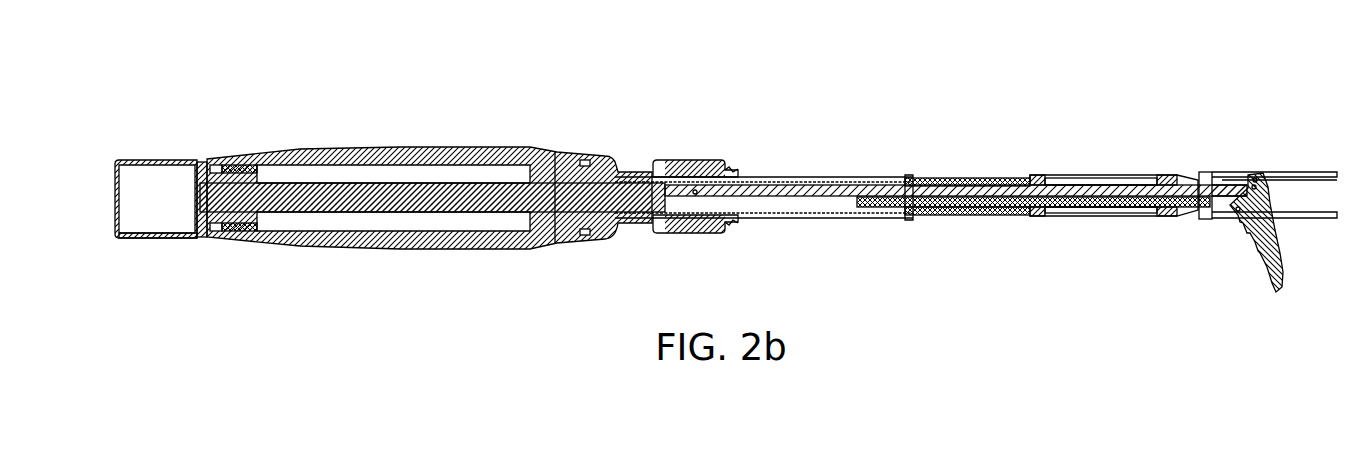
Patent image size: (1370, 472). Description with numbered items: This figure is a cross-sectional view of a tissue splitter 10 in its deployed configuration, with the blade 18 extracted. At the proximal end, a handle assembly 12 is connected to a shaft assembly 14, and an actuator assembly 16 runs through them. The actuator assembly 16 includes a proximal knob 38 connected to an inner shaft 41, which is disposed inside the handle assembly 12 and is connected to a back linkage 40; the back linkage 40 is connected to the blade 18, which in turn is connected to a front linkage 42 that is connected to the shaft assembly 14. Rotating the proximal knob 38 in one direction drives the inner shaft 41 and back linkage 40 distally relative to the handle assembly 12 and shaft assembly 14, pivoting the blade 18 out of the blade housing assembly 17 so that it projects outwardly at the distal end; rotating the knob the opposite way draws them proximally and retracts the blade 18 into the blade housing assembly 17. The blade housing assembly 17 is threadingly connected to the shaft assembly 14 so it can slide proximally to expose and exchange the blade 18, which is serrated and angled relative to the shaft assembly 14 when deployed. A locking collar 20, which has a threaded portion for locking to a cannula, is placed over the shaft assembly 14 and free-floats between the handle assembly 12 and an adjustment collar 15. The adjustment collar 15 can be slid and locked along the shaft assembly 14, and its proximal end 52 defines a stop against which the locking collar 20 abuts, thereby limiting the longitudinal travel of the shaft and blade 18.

The tissue splitter 10 is at (946, 87).
The handle assembly 12 is at (450, 144).
The shaft assembly 14 is at (975, 176).
The adjustment collar 15 is at (815, 175).
The actuator assembly 16 is at (168, 153).
The blade housing assembly 17 is at (1200, 173).
The blade 18 is at (1283, 243).
The locking collar 20 is at (687, 158).
The proximal knob 38 is at (172, 240).
The back linkage 40 is at (767, 197).
The inner shaft 41 is at (382, 204).
The front linkage 42 is at (955, 208).
The proximal end of the adjustment collar 52 is at (750, 175).